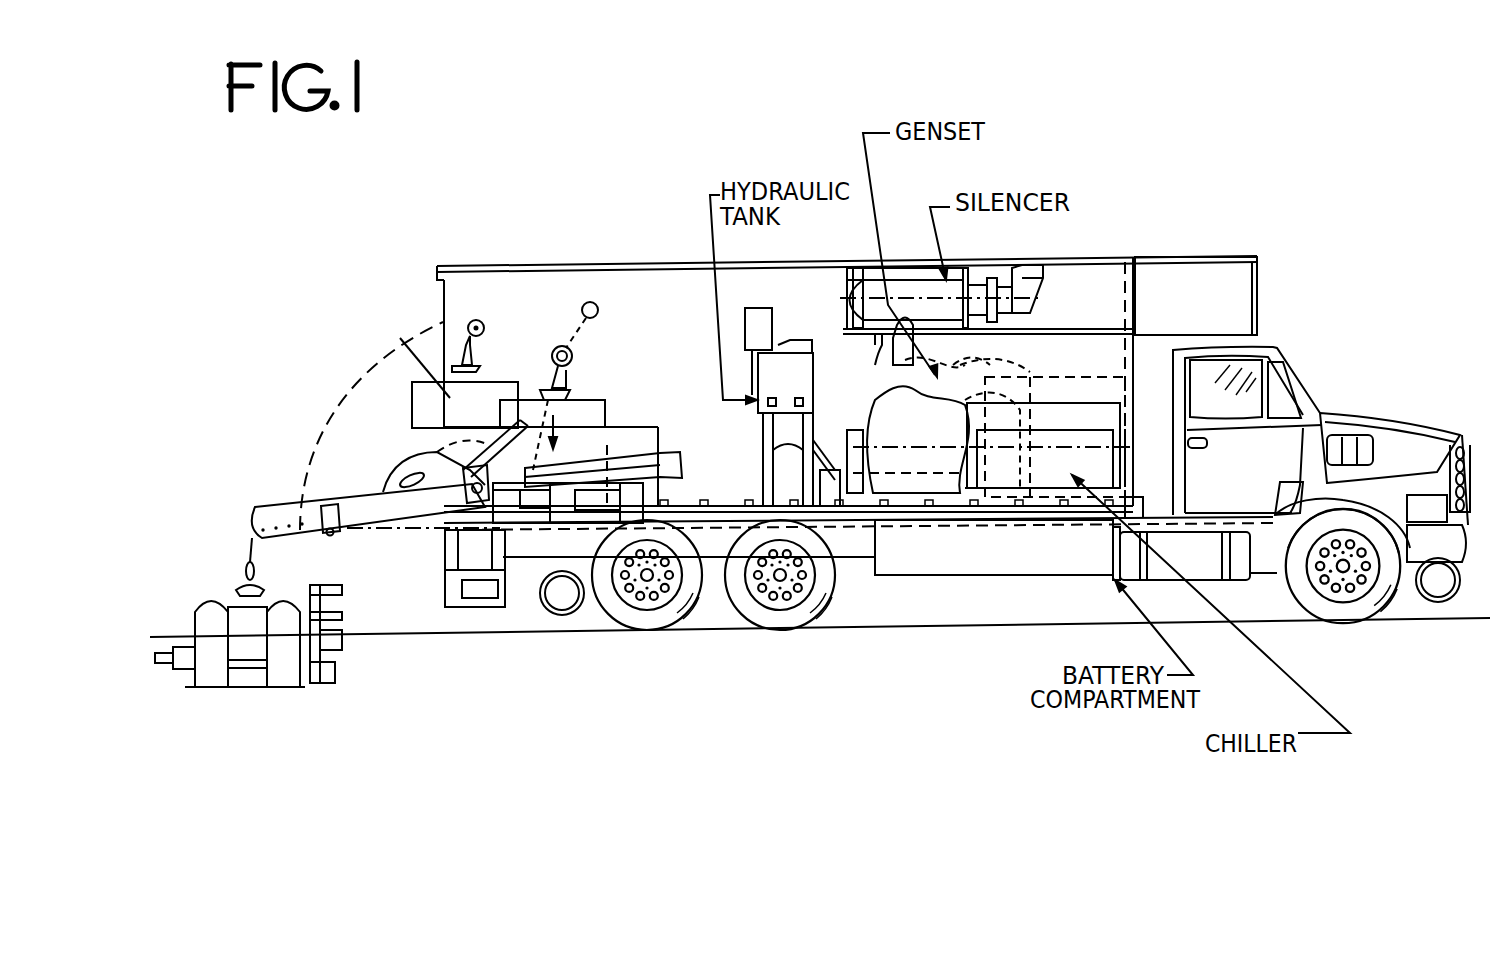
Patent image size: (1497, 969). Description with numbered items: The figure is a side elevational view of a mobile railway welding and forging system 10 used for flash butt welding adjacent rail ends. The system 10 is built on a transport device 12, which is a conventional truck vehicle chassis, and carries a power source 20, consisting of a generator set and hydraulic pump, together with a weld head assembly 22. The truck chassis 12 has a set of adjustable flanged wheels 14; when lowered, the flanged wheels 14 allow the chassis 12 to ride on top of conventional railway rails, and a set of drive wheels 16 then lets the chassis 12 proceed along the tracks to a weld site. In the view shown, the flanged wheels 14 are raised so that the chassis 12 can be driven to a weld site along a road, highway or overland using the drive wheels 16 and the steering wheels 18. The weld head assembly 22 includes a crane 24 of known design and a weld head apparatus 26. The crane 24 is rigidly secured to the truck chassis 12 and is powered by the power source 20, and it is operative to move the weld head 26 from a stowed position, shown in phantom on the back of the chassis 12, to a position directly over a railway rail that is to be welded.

The mobile railway welding and forging system 10 is at (1198, 213).
The transport device 12 is at (1312, 372).
The adjustable flanged wheels 14 is at (542, 605).
The drive wheels 16 is at (604, 630).
The steering wheels 18 is at (1383, 622).
The power source 20 is at (1088, 245).
The weld head assembly 22 is at (230, 515).
The crane 24 is at (350, 527).
The weld head apparatus 26 is at (335, 680).